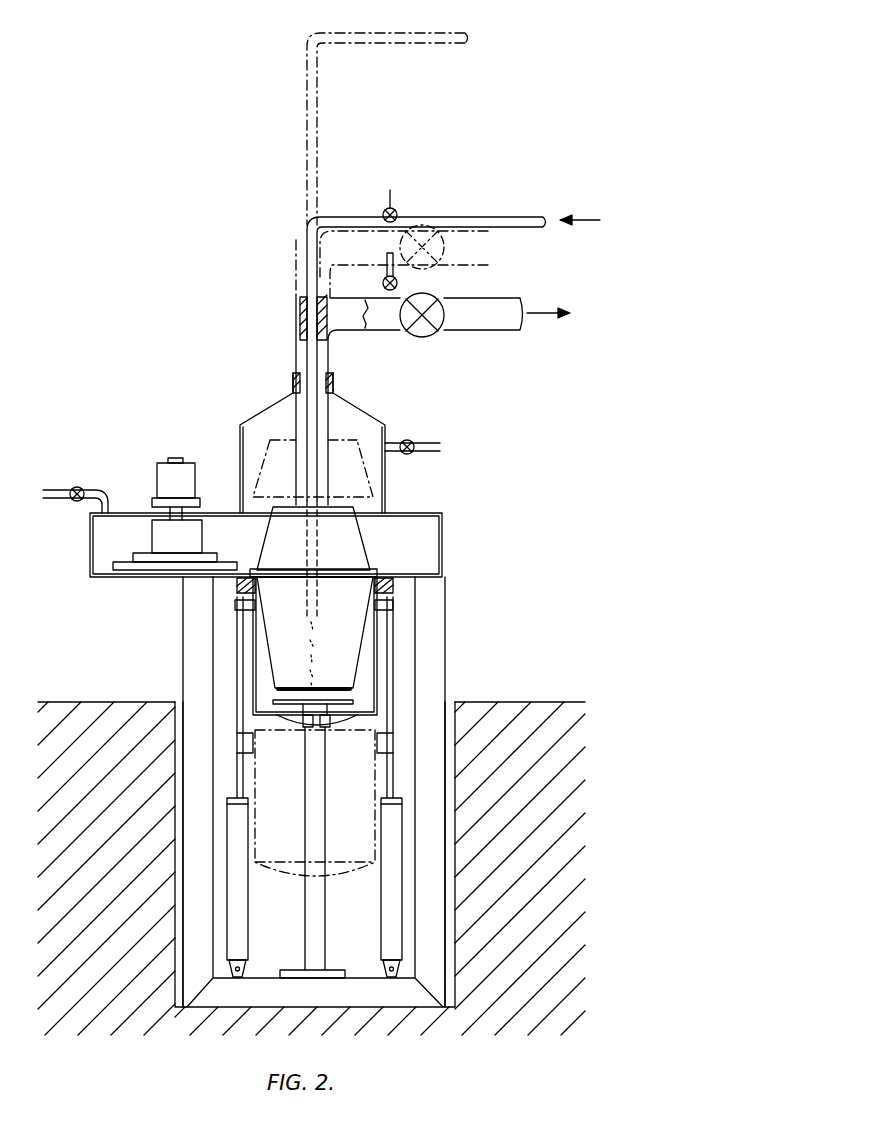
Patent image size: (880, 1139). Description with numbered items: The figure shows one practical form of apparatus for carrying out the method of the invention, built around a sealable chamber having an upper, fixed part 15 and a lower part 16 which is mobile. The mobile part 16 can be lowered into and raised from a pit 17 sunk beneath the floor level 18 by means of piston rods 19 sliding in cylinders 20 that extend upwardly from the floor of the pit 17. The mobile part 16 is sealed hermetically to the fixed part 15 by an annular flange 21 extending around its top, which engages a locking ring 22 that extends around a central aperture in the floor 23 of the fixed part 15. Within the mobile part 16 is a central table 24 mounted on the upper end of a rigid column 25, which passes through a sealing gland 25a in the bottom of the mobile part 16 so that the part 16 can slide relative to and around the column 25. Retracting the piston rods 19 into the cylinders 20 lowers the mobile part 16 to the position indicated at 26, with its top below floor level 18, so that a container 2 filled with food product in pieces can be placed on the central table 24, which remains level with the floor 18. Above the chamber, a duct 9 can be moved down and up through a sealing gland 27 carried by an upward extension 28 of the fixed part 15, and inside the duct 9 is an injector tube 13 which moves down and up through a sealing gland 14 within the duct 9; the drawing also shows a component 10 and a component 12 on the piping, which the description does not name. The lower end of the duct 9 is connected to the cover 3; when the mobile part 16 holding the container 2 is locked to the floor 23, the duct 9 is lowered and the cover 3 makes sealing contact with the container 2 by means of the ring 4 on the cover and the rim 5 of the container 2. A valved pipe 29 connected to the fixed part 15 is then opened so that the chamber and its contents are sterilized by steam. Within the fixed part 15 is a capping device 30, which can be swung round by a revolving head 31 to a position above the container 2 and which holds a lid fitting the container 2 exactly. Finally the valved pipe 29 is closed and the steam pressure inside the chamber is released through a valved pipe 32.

The container 2 is at (347, 670).
The cover 3 is at (358, 534).
The ring 4 is at (350, 570).
The rim 5 is at (284, 582).
The duct 9 is at (388, 320).
The pump 10 is at (428, 331).
The valve 12 is at (400, 283).
The injector tube 13 is at (330, 216).
The sealing gland 14 is at (300, 312).
The upper fixed part 15 is at (437, 512).
The lower mobile part 16 is at (377, 699).
The pit 17 is at (455, 842).
The floor level 18 is at (544, 702).
The piston rods 19 is at (233, 638).
The cylinders 20 is at (237, 905).
The annular flange 21 is at (392, 590).
The locking ring 22 is at (392, 582).
The floor 23 is at (430, 573).
The central table 24 is at (277, 698).
The rigid column 25 is at (307, 718).
The sealing gland 25a is at (330, 722).
The lowered position 26 is at (350, 852).
The sealing gland 27 is at (293, 382).
The upward extension 28 is at (240, 437).
The valved pipe 29 is at (62, 490).
The capping device 30 is at (157, 537).
The revolving head 31 is at (157, 470).
The valved pipe 32 is at (425, 441).